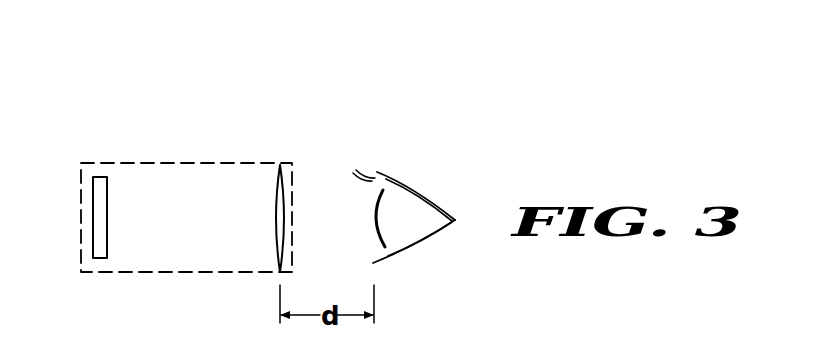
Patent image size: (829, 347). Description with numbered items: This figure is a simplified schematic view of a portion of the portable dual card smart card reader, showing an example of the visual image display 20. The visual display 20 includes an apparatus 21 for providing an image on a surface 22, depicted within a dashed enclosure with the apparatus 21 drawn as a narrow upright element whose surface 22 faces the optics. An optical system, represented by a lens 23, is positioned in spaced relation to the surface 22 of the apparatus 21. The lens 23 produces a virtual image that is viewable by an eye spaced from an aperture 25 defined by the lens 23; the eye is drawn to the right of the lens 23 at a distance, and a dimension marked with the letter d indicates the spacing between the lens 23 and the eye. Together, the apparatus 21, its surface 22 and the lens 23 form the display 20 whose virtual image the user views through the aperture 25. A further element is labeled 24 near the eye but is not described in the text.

The visual image display 20 is at (176, 148).
The apparatus for providing an image 21 is at (93, 195).
The surface 22 is at (108, 212).
The lens 23 is at (275, 218).
The eyelid 24 is at (428, 193).
The aperture 25 is at (328, 164).